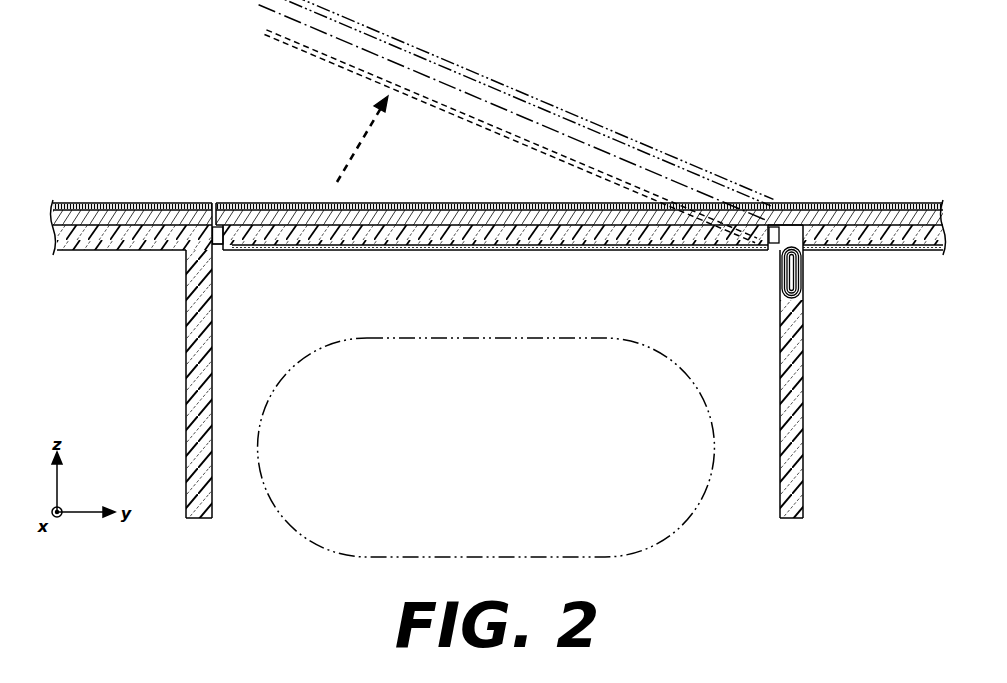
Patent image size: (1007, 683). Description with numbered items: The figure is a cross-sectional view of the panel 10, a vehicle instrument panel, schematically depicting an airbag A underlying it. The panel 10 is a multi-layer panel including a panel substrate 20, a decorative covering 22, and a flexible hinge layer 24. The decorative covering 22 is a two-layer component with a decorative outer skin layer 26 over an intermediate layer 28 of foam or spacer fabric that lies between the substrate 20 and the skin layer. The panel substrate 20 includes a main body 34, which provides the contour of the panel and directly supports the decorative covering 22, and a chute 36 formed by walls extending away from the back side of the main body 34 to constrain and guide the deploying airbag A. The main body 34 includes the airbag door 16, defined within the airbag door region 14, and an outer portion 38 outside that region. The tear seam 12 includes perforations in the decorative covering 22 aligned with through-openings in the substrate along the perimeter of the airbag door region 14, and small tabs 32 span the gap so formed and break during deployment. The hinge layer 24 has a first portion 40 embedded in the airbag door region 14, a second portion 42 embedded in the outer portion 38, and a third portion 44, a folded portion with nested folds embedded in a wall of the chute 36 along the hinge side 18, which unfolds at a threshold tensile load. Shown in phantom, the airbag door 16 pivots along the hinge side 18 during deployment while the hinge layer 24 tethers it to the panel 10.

The panel 10 is at (48, 152).
The tear seam 12 is at (213, 217).
The airbag door region 14 is at (773, 203).
The airbag door 16 is at (322, 55).
The hinge side 18 is at (787, 203).
The panel substrate 20 is at (132, 243).
The decorative covering 22 is at (92, 207).
The flexible hinge layer 24 is at (476, 248).
The decorative outer skin layer 26 is at (123, 205).
The intermediate layer 28 is at (165, 220).
The tabs 32 is at (218, 242).
The main body 34 is at (823, 230).
The chute 36 is at (190, 350).
The outer portion 38 is at (877, 240).
The first portion 40 is at (610, 252).
The second portion 42 is at (892, 248).
The third portion 44 is at (788, 300).
The airbag A is at (273, 398).